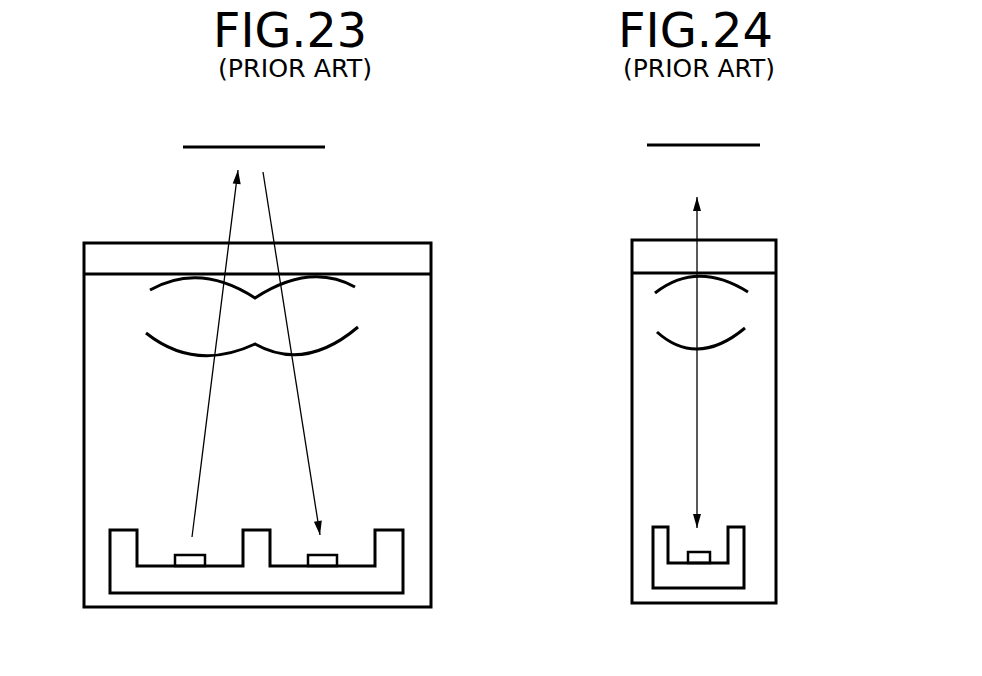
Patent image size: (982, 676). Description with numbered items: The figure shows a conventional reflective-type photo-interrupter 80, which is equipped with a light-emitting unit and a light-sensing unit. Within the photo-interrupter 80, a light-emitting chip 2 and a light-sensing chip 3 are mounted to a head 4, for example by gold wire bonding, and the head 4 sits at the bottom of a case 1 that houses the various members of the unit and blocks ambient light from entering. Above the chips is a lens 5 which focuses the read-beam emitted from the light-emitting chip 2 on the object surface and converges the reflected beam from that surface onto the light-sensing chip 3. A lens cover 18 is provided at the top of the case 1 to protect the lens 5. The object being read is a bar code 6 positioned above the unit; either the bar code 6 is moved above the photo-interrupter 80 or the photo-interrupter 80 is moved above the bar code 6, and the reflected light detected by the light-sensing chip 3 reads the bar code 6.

In FIG. 23, the reflective-type photo-interrupter 80 is at (157, 111).
In FIG. 24, the reflective-type photo-interrupter 80 is at (618, 183).
In FIG. 23, the housing 1 is at (430, 383).
In FIG. 24, the housing 1 is at (632, 375).
In FIG. 23, the lens cover 18 is at (430, 252).
In FIG. 24, the lens cover 18 is at (775, 255).
In FIG. 23, the lens 5 is at (342, 311).
In FIG. 24, the lens 5 is at (735, 315).
In FIG. 23, the head 4 is at (403, 552).
In FIG. 24, the head 4 is at (653, 553).
In FIG. 23, the light-emitting chip 2 is at (188, 555).
In FIG. 23, the light-sensing chip 3 is at (328, 552).
In FIG. 23, the bar code 6 is at (298, 147).
In FIG. 24, the bar code 6 is at (745, 145).